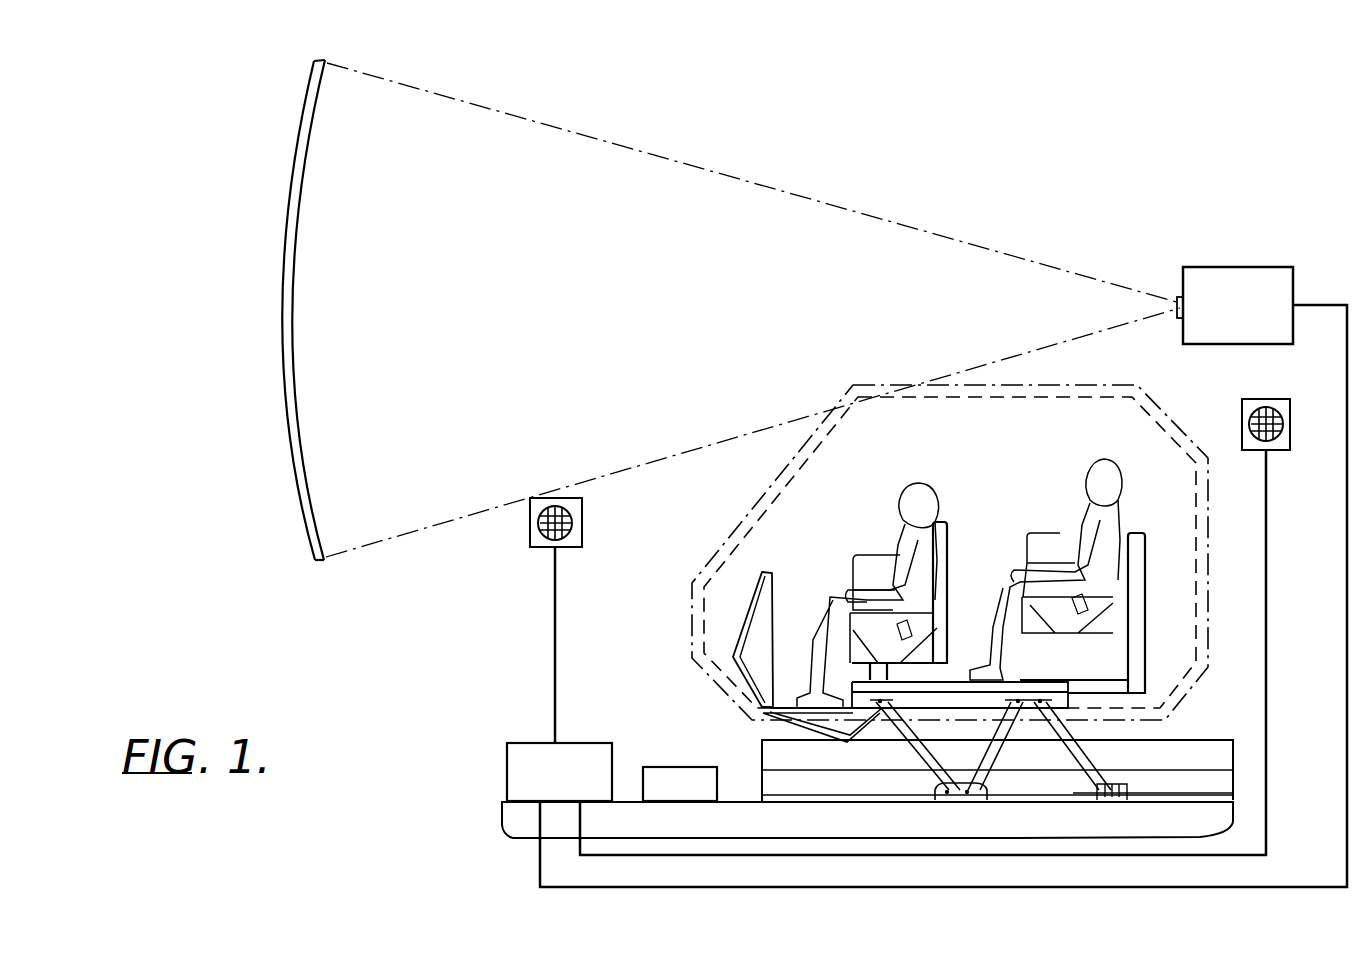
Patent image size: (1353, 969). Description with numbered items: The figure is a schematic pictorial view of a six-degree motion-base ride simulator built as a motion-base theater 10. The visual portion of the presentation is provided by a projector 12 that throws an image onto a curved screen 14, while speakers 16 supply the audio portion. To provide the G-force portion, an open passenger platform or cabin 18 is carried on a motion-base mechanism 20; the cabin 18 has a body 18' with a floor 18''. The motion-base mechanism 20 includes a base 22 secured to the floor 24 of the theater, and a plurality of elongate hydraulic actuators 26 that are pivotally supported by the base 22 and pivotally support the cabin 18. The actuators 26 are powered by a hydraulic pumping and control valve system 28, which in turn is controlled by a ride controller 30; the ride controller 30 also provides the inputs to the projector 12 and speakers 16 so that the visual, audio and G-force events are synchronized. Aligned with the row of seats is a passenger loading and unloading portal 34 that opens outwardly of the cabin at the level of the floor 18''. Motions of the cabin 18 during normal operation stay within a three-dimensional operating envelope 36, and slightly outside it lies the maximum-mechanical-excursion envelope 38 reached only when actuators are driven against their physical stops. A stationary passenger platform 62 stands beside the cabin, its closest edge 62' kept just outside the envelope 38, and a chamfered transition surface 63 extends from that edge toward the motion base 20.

The motion-base ride-simulator theater 10 is at (1058, 242).
The projector 12 is at (1245, 270).
The screen 14 is at (293, 272).
The speakers 16 is at (536, 528).
The passenger platform or cabin 18 is at (1021, 591).
The body 18' is at (912, 597).
The floor 18'' is at (866, 681).
The motion-base mechanism 20 is at (1162, 698).
The base 22 is at (1073, 796).
The floor 24 is at (867, 806).
The actuators 26 is at (906, 750).
The hydraulic pumping and control valve system 28 is at (680, 784).
The ride controller 30 is at (577, 748).
The passenger loading and unloading portal 34 is at (806, 590).
The operating envelope 36 is at (1070, 395).
The maximum-mechanical-excursion envelope 38 is at (1156, 405).
The stationary passenger platform 62 is at (966, 761).
The closest edge 62' is at (1217, 750).
The chamfered transition surface 63 is at (1223, 783).